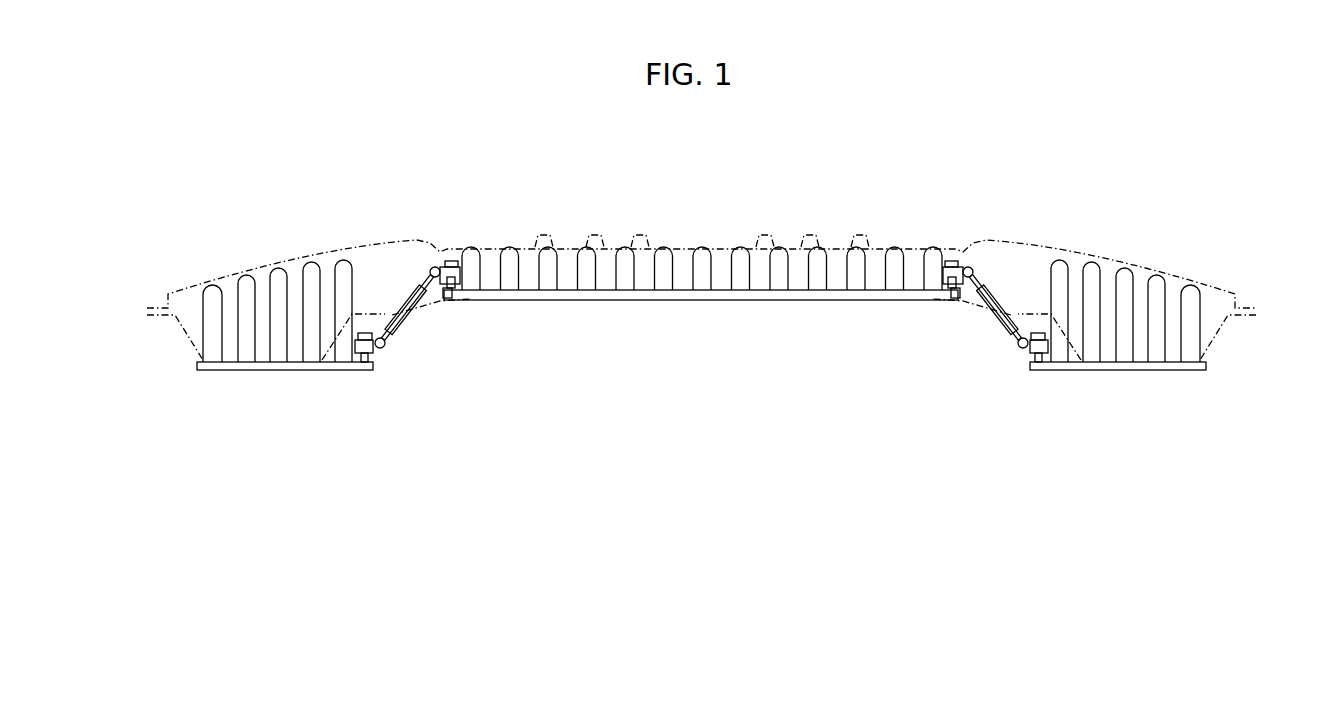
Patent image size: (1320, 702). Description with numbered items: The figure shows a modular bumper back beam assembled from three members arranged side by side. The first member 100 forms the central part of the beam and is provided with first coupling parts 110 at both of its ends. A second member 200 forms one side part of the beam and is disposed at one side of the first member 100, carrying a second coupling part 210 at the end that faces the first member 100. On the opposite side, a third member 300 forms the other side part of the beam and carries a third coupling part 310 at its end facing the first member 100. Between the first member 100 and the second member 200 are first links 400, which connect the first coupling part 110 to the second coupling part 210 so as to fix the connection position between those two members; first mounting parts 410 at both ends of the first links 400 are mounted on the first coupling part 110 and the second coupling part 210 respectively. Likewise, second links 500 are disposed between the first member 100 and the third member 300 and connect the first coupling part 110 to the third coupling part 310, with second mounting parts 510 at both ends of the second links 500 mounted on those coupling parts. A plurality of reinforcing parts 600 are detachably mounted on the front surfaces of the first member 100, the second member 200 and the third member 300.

The first member 100 is at (680, 300).
The first coupling part 110 is at (457, 300).
The second member 200 is at (235, 367).
The second coupling part 210 is at (362, 372).
The third member 300 is at (1167, 370).
The third coupling part 310 is at (1042, 370).
The first link 400 is at (405, 322).
The first mounting part 410 is at (364, 325).
The second link 500 is at (998, 320).
The second mounting part 510 is at (1037, 330).
The reinforcing part 600 is at (250, 288).